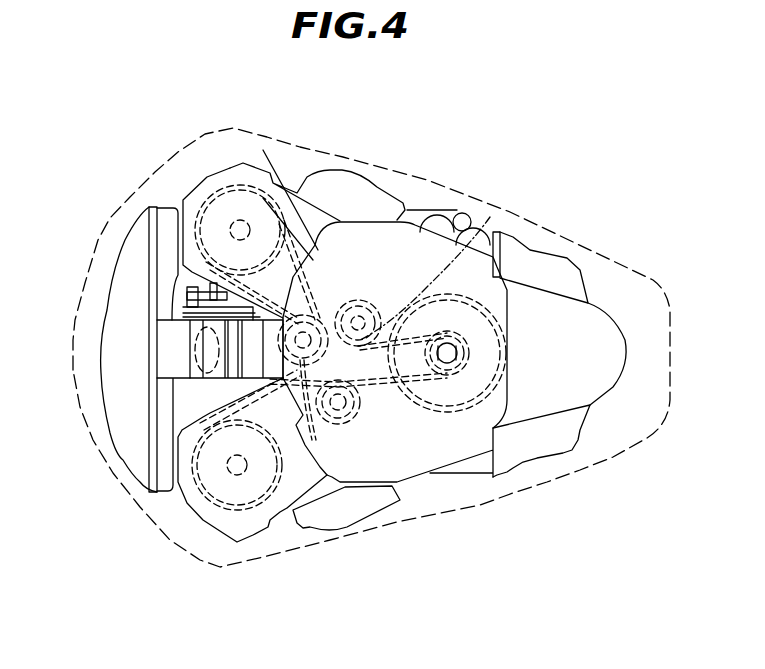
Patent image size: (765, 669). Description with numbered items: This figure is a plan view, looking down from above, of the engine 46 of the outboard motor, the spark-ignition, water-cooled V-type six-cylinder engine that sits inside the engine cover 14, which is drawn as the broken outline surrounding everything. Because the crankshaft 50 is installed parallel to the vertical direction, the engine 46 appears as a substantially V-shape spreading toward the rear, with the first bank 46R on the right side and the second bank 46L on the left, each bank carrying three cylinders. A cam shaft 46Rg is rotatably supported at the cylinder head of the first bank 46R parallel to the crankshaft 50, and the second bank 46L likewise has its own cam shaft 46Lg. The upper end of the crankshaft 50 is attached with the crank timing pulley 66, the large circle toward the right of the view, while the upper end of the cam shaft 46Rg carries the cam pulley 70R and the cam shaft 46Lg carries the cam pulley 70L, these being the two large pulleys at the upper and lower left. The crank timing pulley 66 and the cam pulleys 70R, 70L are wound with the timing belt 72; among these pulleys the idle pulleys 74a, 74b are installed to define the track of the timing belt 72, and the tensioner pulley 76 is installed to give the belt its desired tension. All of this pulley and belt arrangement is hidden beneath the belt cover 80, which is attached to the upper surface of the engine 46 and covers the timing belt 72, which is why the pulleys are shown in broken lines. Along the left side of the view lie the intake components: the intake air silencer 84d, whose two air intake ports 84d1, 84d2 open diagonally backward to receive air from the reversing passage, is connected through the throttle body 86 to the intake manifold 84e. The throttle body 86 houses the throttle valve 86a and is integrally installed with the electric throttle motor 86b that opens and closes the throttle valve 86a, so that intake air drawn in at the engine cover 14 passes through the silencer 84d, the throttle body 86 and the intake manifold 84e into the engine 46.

The engine cover 14 is at (587, 465).
The engine 46 is at (608, 285).
The second bank 46L is at (289, 172).
The first bank 46R is at (291, 535).
The cam shaft 46Lg is at (238, 225).
The cam shaft 46Rg is at (228, 487).
The crankshaft 50 is at (449, 360).
The crank timing pulley 66 is at (452, 355).
The cam pulley 70L is at (230, 222).
The cam pulley 70R is at (207, 487).
The timing belt 72 is at (300, 455).
The idle pulley 74a is at (433, 257).
The idle pulley 74b is at (343, 410).
The tensioner pulley 76 is at (360, 318).
The belt cover 80 is at (293, 268).
The intake air silencer 84d is at (490, 217).
The air intake port 84d1 is at (263, 150).
The air intake port 84d2 is at (320, 412).
The intake manifold 84e is at (127, 267).
The throttle body 86 is at (195, 383).
The throttle valve 86a is at (200, 353).
The electric throttle motor 86b is at (178, 307).